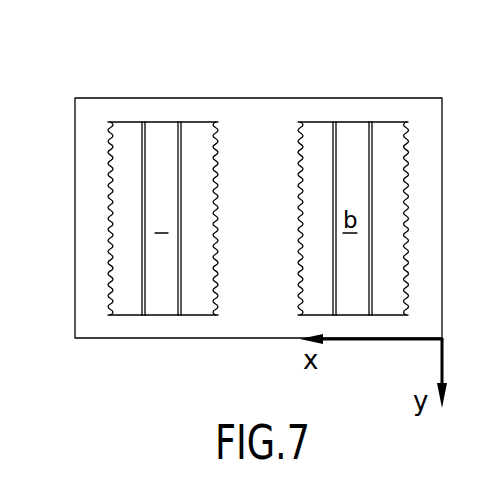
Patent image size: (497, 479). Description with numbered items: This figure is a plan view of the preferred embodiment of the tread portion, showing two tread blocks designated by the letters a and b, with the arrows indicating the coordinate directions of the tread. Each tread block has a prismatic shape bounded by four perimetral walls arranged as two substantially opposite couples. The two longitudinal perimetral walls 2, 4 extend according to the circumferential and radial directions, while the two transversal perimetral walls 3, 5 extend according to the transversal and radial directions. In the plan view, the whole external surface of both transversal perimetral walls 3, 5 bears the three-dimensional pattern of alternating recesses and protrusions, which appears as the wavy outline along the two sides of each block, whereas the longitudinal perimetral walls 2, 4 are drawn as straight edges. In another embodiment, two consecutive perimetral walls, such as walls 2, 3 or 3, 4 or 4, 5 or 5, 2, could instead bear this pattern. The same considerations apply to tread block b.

The longitudinal perimetral wall 2 is at (163, 315).
The transversal perimetral wall 3 is at (110, 220).
The longitudinal perimetral wall 4 is at (163, 122).
The transversal perimetral wall 5 is at (213, 200).